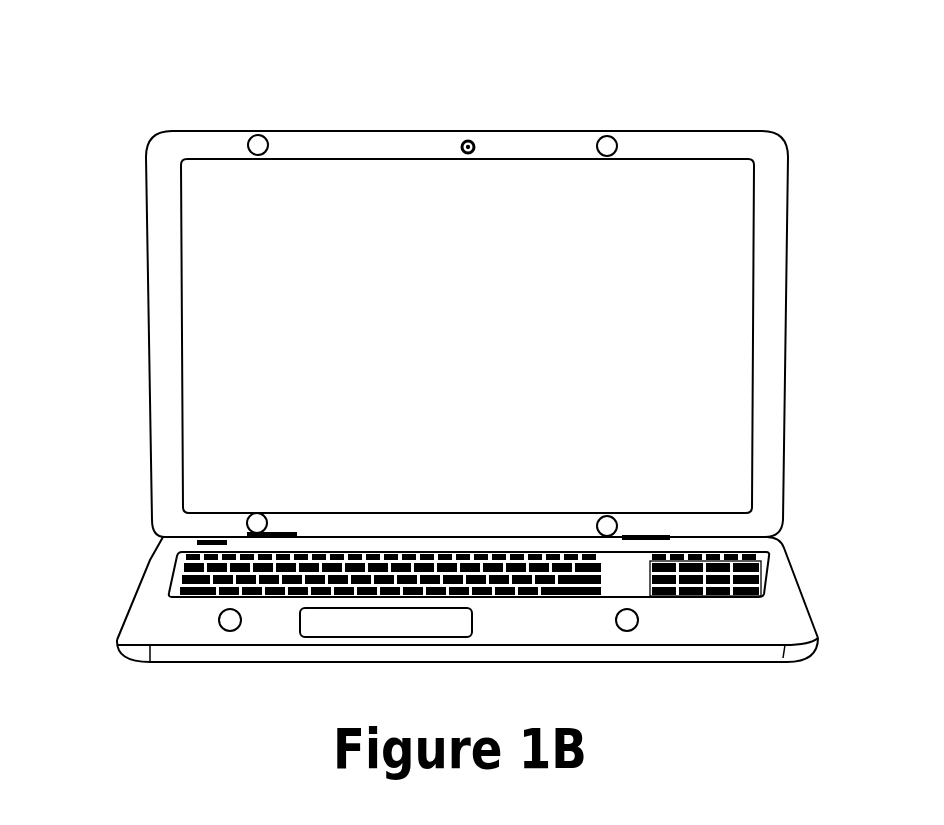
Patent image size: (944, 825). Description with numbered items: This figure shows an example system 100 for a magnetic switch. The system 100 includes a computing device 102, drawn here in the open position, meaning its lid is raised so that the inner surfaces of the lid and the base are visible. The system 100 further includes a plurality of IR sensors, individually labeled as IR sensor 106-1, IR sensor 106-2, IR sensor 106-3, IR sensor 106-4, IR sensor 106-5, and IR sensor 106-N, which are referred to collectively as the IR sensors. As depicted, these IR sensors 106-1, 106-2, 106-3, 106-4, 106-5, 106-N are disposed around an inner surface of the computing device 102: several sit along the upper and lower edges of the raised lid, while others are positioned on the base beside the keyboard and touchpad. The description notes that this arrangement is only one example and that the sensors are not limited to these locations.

The system 100 is at (131, 78).
The computing device 102 is at (789, 188).
The IR sensor 106-1 is at (262, 135).
The IR sensor 106-2 is at (607, 136).
The IR sensor 106-3 is at (617, 527).
The IR sensor 106-4 is at (638, 626).
The IR sensor 106-5 is at (222, 629).
The IR sensor 106-N is at (247, 523).